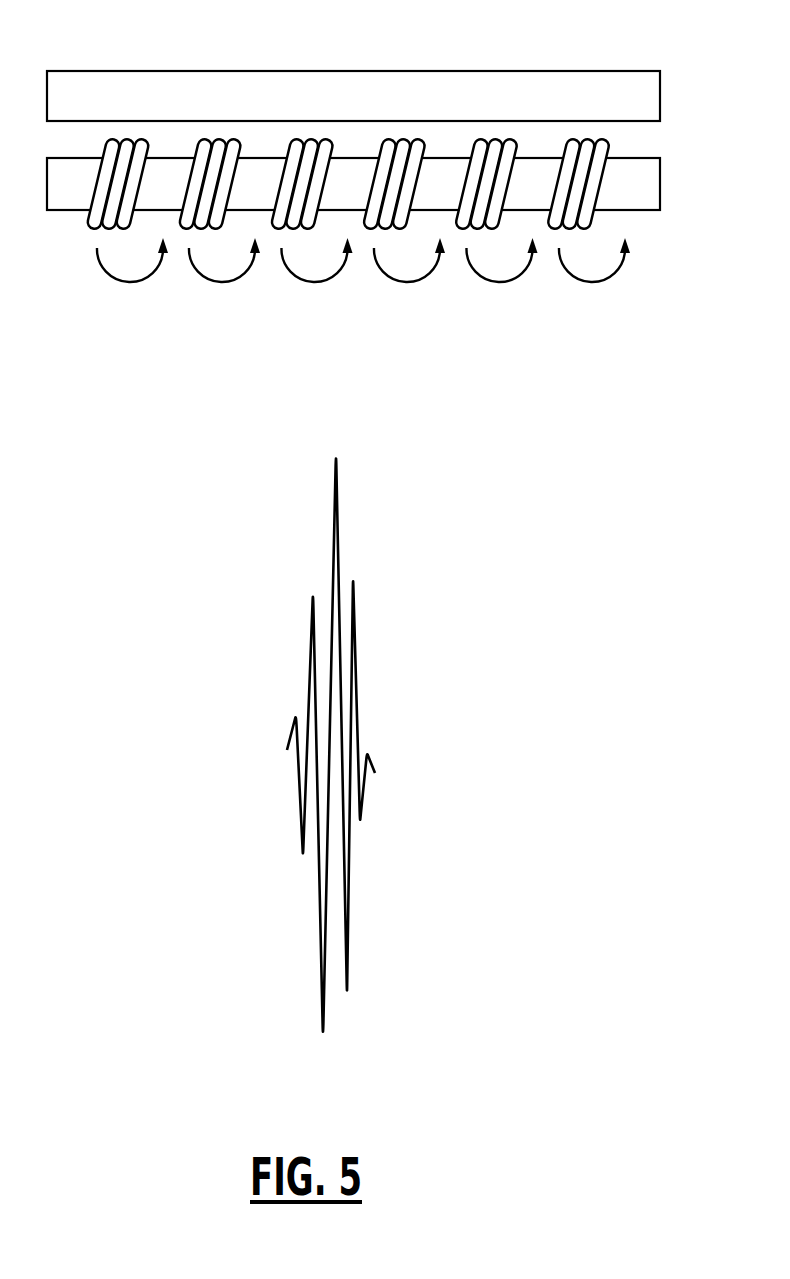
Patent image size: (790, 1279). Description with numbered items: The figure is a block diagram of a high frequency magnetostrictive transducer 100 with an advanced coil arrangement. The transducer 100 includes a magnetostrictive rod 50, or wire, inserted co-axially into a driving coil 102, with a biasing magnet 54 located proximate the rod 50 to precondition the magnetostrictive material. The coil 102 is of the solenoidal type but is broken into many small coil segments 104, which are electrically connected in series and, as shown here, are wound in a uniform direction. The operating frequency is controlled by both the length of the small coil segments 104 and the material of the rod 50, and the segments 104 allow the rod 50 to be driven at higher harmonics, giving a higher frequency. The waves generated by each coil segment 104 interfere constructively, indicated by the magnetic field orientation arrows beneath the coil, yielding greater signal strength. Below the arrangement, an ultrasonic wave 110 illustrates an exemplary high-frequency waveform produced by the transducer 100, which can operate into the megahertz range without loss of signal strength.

The high frequency magnetostrictive transducer 100 is at (320, 26).
The biasing magnet 54 is at (508, 71).
The magnetostrictive rod 50 is at (661, 175).
The coil 102 is at (324, 151).
The small coil segments 104 is at (150, 138).
The ultrasonic wave 110 is at (323, 424).